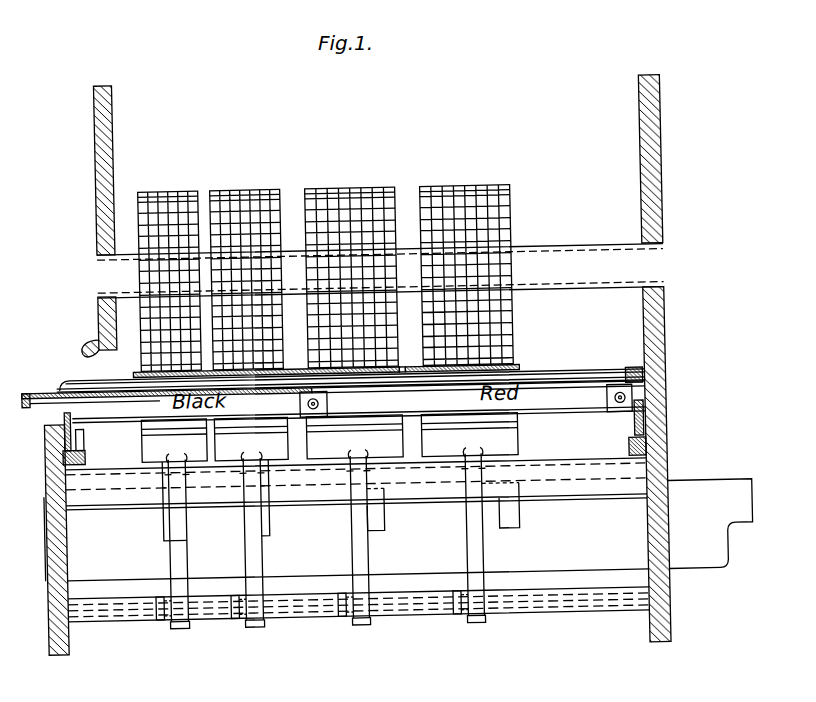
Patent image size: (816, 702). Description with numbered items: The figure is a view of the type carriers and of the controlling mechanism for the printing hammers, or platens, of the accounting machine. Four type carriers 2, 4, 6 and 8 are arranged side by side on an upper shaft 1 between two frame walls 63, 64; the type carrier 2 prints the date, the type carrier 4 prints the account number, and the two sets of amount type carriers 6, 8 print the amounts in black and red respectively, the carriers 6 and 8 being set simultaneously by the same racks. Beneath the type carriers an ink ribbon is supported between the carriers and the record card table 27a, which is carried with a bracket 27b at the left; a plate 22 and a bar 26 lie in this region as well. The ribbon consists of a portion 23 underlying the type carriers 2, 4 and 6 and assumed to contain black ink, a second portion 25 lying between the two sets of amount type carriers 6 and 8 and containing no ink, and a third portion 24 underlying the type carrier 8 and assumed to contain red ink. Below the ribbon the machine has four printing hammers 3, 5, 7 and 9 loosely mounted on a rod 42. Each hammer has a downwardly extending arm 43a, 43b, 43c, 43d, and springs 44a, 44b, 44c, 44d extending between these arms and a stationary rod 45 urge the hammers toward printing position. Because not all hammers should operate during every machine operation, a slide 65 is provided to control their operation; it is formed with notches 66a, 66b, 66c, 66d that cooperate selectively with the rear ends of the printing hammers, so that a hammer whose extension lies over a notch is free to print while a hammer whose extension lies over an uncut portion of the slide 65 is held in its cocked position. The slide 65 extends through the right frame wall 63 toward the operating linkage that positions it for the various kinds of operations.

The upper shaft 1 is at (105, 267).
The type carrier 2 is at (177, 196).
The type carrier 4 is at (251, 195).
The type carrier 6 is at (359, 194).
The type carrier 8 is at (471, 194).
The printing hammer 3 is at (177, 470).
The printing hammer 5 is at (251, 470).
The printing hammer 7 is at (351, 469).
The printing hammer 9 is at (487, 471).
The plate 22 is at (412, 380).
The ribbon portion 23 is at (136, 370).
The ribbon portion 24 is at (526, 369).
The ribbon portion 25 is at (409, 368).
The bus bar 26 is at (578, 384).
The record card table 27a is at (43, 385).
The lower support bracket 27b is at (64, 408).
The rod 42 is at (571, 465).
The downwardly extending arm 43a is at (174, 619).
The downwardly extending arm 43b is at (250, 619).
The downwardly extending arm 43c is at (353, 619).
The downwardly extending arm 43d is at (474, 621).
The spring 44a is at (146, 600).
The spring 44b is at (238, 606).
The spring 44c is at (345, 604).
The spring 44d is at (451, 604).
The stationary rod 45 is at (584, 609).
The right frame wall 63 is at (657, 353).
The left frame wall 64 is at (50, 625).
The slide 65 is at (694, 493).
The notch 66a is at (163, 533).
The notch 66b is at (265, 533).
The notch 66c is at (367, 539).
The notch 66d is at (518, 522).